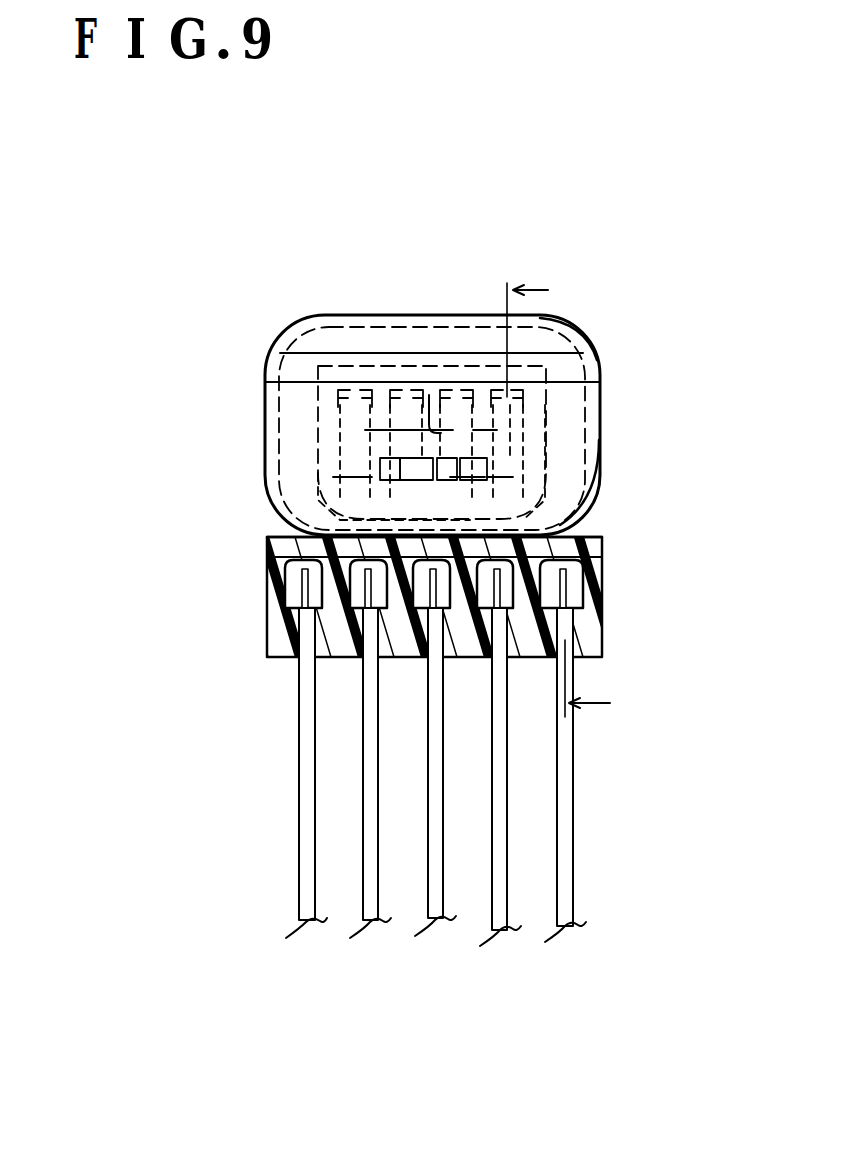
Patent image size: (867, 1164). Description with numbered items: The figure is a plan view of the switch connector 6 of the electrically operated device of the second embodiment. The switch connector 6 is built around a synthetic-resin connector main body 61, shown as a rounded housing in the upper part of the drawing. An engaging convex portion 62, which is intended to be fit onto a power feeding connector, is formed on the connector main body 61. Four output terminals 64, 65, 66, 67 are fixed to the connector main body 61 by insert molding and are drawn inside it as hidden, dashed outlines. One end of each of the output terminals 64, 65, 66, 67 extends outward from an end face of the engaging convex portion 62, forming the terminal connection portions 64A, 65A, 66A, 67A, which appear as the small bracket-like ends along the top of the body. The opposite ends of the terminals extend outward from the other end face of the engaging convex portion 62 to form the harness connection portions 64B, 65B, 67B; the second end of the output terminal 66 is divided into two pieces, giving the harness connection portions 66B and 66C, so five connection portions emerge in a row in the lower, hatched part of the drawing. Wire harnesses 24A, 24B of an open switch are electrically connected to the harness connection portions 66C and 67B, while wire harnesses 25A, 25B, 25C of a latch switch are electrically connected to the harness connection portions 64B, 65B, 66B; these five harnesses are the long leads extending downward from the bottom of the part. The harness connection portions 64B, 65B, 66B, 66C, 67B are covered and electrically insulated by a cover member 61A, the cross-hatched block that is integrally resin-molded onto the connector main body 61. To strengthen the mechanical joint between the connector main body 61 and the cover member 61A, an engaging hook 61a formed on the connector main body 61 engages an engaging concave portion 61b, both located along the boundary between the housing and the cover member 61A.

The switch connector 6 is at (206, 333).
The connector main body 61 is at (284, 316).
The engaging hook 61a is at (602, 526).
The engaging concave portion 61b is at (300, 536).
The cover member 61A is at (264, 642).
The engaging convex portion 62 is at (482, 392).
The output terminal 64 is at (336, 440).
The terminal connection portion 64A is at (337, 392).
The harness connection portion 64B is at (300, 588).
The output terminal 65 is at (429, 395).
The terminal connection portion 65A is at (381, 392).
The harness connection portion 65B is at (360, 600).
The output terminal 66 is at (478, 447).
The terminal connection portion 66A is at (450, 392).
The harness connection portion 66B is at (434, 600).
The harness connection portion 66C is at (523, 590).
The output terminal 67 is at (599, 462).
The terminal connection portion 67A is at (556, 335).
The harness connection portion 67B is at (602, 582).
The wire harness 25A is at (305, 875).
The wire harness 25B is at (373, 893).
The wire harness 25C is at (440, 897).
The wire harness 24A is at (500, 908).
The wire harness 24B is at (565, 893).